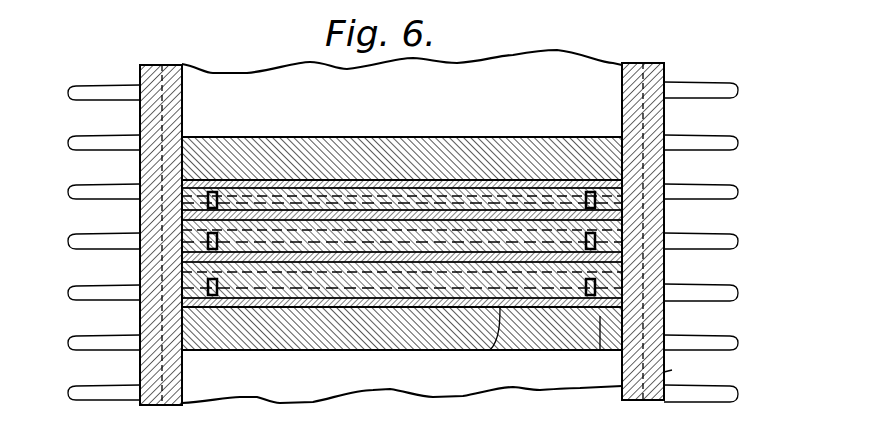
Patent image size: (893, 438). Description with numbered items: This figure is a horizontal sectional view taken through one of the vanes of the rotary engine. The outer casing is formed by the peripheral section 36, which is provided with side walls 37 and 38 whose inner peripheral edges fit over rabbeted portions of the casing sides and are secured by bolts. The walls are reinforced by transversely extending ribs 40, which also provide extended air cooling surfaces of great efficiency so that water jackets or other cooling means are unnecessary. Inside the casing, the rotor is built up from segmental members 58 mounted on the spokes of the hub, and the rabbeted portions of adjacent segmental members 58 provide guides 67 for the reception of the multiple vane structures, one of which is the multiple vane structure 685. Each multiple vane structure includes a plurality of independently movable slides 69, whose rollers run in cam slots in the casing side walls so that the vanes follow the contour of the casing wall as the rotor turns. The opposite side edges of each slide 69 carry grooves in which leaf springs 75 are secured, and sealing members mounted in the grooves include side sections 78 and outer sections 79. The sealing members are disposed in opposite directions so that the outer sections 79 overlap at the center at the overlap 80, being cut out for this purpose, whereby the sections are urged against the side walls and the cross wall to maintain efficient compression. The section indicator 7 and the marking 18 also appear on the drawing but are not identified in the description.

The section line 7- 7 is at (32, 232).
The bolt 18 is at (596, 283).
The side frame member 36 is at (672, 370).
The left side plate 37 is at (140, 160).
The right side plate 38 is at (664, 168).
The cooling fins 40 is at (88, 298).
The bottom plate 58 is at (541, 337).
The passage 67 is at (490, 350).
The intermediate plate 69 is at (666, 268).
The clamping bolts 75 is at (208, 242).
The bolt 78 is at (207, 296).
The channel 79 is at (494, 235).
The channel 80 is at (430, 240).
The port 685 is at (600, 316).